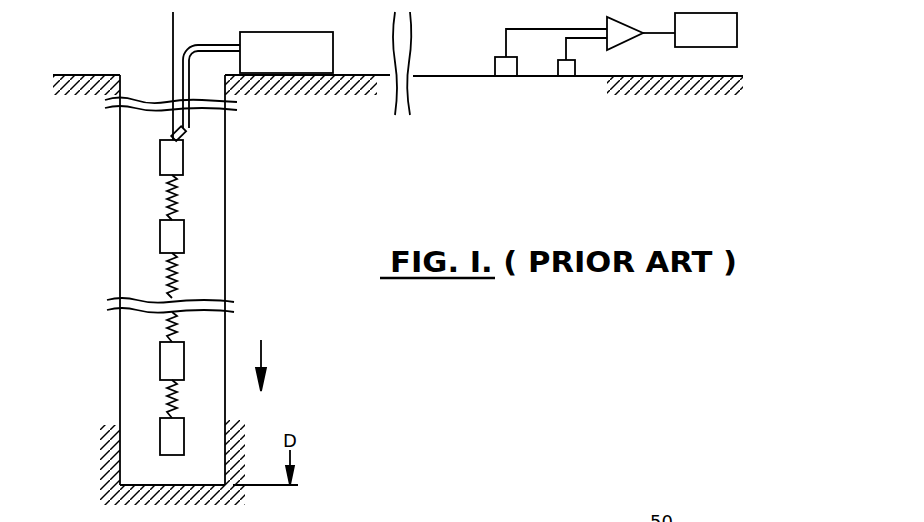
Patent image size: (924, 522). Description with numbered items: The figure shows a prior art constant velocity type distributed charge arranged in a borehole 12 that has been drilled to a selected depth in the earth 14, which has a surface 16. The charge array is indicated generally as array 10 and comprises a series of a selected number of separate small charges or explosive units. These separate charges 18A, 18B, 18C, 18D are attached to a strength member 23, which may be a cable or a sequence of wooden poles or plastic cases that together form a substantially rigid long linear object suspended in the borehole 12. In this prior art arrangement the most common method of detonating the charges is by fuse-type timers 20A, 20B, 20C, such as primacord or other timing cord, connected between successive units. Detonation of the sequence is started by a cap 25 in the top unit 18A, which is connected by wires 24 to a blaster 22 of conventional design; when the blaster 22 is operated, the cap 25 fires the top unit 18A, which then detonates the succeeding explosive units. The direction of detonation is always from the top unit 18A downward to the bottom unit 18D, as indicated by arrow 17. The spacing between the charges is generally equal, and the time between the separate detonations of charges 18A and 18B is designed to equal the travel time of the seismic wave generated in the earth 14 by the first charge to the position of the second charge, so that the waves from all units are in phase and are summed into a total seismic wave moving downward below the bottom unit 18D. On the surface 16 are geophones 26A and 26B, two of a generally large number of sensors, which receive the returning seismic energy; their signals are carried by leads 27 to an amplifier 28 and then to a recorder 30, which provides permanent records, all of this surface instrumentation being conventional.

The charge array 10 is at (250, 215).
The borehole 12 is at (225, 285).
The earth 14 is at (85, 168).
The surface 16 is at (103, 75).
The arrow 17 is at (262, 352).
The top explosive unit 18A is at (183, 160).
The second explosive unit 18B is at (184, 237).
The third explosive unit 18C is at (184, 365).
The bottom explosive unit 18D is at (184, 445).
The fuse-type timer 20A is at (170, 200).
The fuse-type timer 20B is at (170, 282).
The fuse-type timer 20C is at (170, 400).
The blaster 22 is at (270, 32).
The strength member 23 is at (171, 40).
The wires 24 is at (223, 43).
The cap 25 is at (188, 137).
The geophone 26A is at (500, 78).
The geophone 26B is at (567, 78).
The geophone leads 27 is at (540, 28).
The amplifier 28 is at (623, 43).
The recorder 30 is at (703, 48).